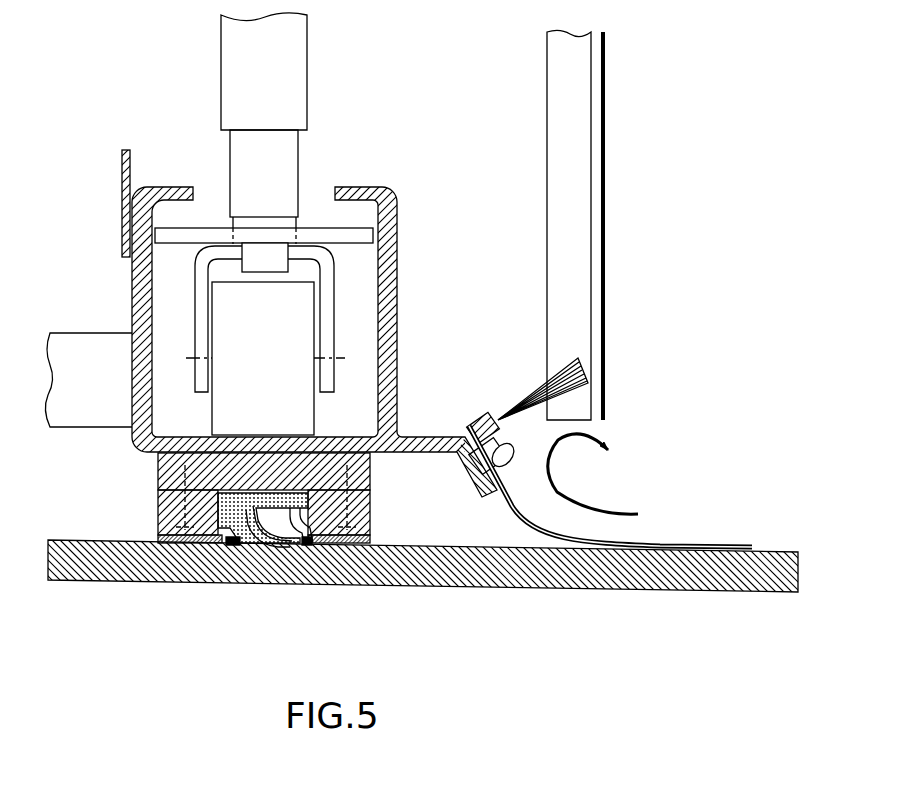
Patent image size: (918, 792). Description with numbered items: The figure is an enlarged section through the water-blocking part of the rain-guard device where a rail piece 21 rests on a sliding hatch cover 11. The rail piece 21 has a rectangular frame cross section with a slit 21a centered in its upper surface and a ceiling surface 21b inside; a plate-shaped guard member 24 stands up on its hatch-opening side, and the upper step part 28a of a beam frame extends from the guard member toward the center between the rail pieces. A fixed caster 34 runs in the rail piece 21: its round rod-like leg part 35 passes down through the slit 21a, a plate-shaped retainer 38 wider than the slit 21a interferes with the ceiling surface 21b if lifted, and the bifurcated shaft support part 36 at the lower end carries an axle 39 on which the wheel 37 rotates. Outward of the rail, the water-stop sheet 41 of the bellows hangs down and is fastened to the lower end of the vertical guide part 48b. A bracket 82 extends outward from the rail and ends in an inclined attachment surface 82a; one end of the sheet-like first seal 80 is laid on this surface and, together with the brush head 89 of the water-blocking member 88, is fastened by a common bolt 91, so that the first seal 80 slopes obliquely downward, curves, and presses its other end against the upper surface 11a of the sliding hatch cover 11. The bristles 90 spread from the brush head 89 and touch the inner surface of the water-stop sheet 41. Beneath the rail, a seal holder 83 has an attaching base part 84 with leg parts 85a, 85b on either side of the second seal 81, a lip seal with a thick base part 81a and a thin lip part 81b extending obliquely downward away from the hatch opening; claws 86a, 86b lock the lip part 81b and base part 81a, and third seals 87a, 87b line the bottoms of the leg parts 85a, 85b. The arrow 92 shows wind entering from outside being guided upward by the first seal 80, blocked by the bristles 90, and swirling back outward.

The sliding hatch cover 11 is at (68, 594).
The upper surface of the sliding hatch cover 11a is at (775, 551).
The rail piece 21 is at (407, 265).
The slit 21a is at (319, 171).
The ceiling surface of the rail piece 21b is at (163, 199).
The guard member 24 is at (109, 163).
The upper step part 28a is at (62, 332).
The fixed caster 34 is at (342, 312).
The leg part 35 is at (277, 187).
The shaft support part 36 is at (339, 345).
The wheel 37 is at (272, 334).
The retainer 38 is at (210, 227).
The axle 39 is at (341, 362).
The water-stop sheet 41 is at (609, 251).
The vertical guide part 48b is at (556, 125).
The first seal 80 is at (526, 521).
The second seal 81 is at (262, 550).
The base part 81a is at (243, 541).
The lip part 81b is at (292, 541).
The bracket 82 is at (428, 436).
The inclined attachment surface 82a is at (452, 444).
The seal holder 83 is at (148, 490).
The attaching base part 84 is at (151, 470).
The leg part 85a is at (156, 515).
The leg part 85b is at (373, 512).
The claw 86a is at (237, 546).
The claw 86b is at (310, 546).
The third seal 87a is at (183, 543).
The third seal 87b is at (345, 543).
The water-blocking member 88 is at (565, 352).
The brush head 89 is at (469, 424).
The bristles 90 is at (537, 390).
The bolt 91 is at (505, 449).
The arrow 92 is at (613, 508).